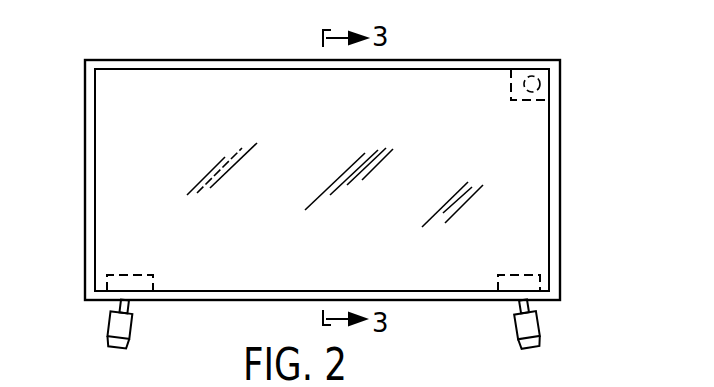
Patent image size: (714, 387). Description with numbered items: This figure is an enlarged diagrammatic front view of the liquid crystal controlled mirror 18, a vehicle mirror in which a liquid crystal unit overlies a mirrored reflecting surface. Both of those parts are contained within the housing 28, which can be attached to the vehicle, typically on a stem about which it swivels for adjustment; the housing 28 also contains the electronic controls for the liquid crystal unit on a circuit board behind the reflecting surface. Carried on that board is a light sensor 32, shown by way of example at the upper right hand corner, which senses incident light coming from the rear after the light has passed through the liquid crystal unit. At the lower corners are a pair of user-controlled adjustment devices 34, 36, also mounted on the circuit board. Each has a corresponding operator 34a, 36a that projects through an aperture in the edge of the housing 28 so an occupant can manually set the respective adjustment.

The liquid crystal controlled mirror 18 is at (595, 112).
The housing 28 is at (437, 59).
The light sensor 32 is at (533, 72).
The adjustment device 34 is at (155, 277).
The operator 34a is at (110, 326).
The adjustment device 36 is at (498, 278).
The operator 36a is at (537, 336).